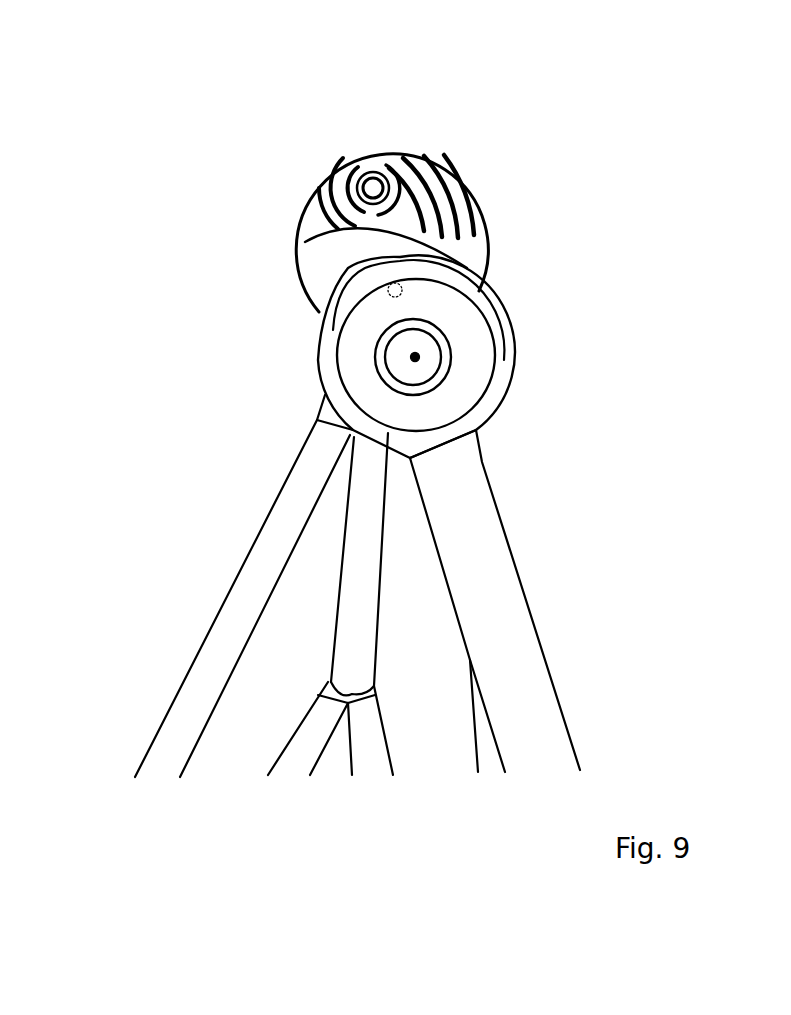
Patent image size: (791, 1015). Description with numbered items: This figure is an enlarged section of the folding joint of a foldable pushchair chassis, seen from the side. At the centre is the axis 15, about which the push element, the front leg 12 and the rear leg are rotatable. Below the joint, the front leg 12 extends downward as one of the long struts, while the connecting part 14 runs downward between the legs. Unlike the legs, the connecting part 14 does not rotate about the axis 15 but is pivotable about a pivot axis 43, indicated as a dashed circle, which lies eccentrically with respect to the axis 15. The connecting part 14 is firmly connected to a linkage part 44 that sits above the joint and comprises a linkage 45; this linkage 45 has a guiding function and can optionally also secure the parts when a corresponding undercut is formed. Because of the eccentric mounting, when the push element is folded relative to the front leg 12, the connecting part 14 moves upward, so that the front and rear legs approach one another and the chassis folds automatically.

The front leg 12 is at (495, 607).
The connecting part 14 is at (350, 638).
The axis 15 is at (413, 358).
The pivot axis 43 is at (375, 293).
The linkage part 44 is at (347, 162).
The linkage 45 is at (393, 253).